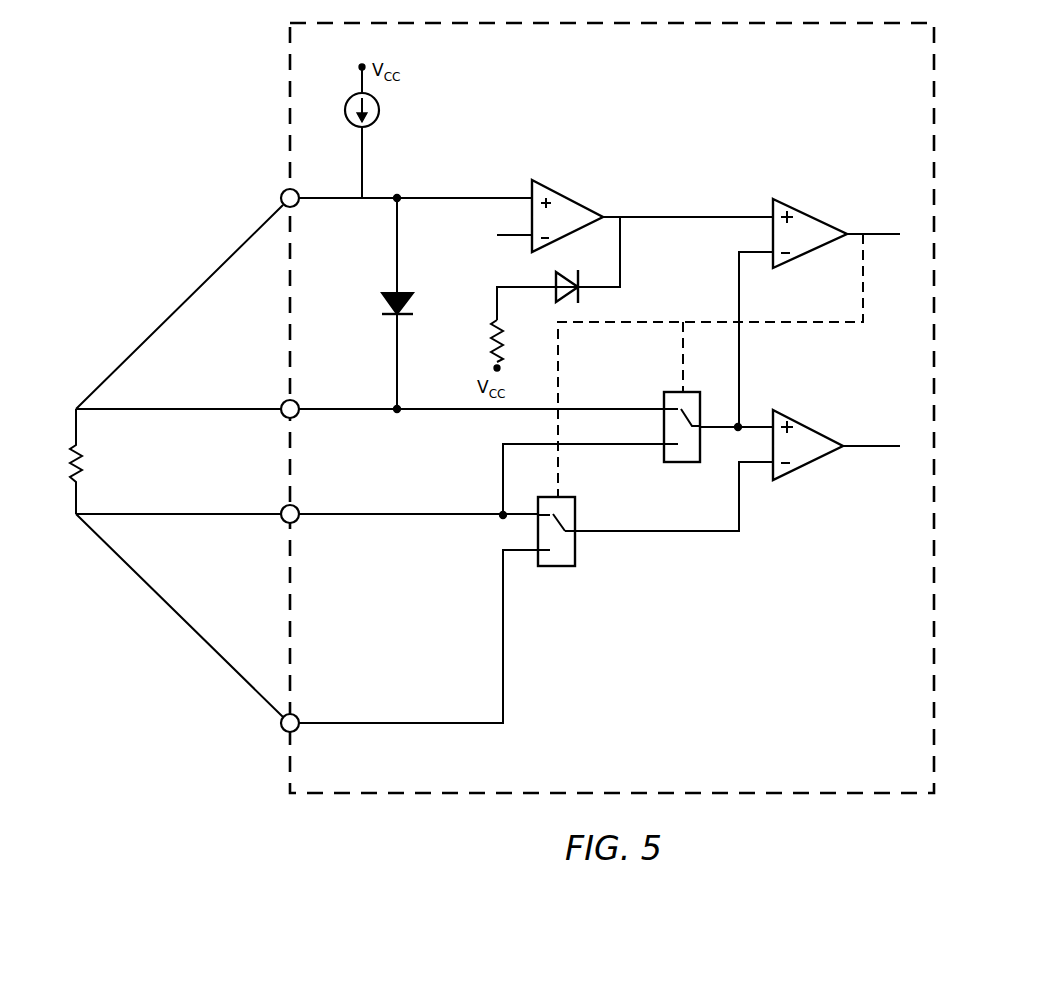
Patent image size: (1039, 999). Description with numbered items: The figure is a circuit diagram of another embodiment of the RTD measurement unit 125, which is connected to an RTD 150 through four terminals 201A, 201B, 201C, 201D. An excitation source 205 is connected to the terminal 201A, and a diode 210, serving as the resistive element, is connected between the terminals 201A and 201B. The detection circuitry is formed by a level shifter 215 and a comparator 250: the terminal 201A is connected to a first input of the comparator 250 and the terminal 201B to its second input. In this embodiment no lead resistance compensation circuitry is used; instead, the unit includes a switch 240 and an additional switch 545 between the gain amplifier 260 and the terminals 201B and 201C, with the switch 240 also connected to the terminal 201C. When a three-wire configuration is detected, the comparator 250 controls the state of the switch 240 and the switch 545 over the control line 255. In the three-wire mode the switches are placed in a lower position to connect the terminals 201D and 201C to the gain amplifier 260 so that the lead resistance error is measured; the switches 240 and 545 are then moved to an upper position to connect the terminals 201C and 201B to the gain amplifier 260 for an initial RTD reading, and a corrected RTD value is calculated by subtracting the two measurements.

The RTD measurement unit 125 is at (612, 408).
The RTD 150 is at (98, 461).
The terminal 201A is at (283, 193).
The terminal 201B is at (283, 400).
The terminal 201C is at (283, 505).
The terminal 201D is at (282, 733).
The excitation source 205 is at (380, 106).
The diode 210 is at (400, 290).
The level shifter 215 is at (569, 197).
The switch 240 is at (558, 567).
The comparator 250 is at (799, 206).
The control line 255 is at (560, 474).
The gain amplifier 260 is at (797, 416).
The switch 545 is at (666, 392).